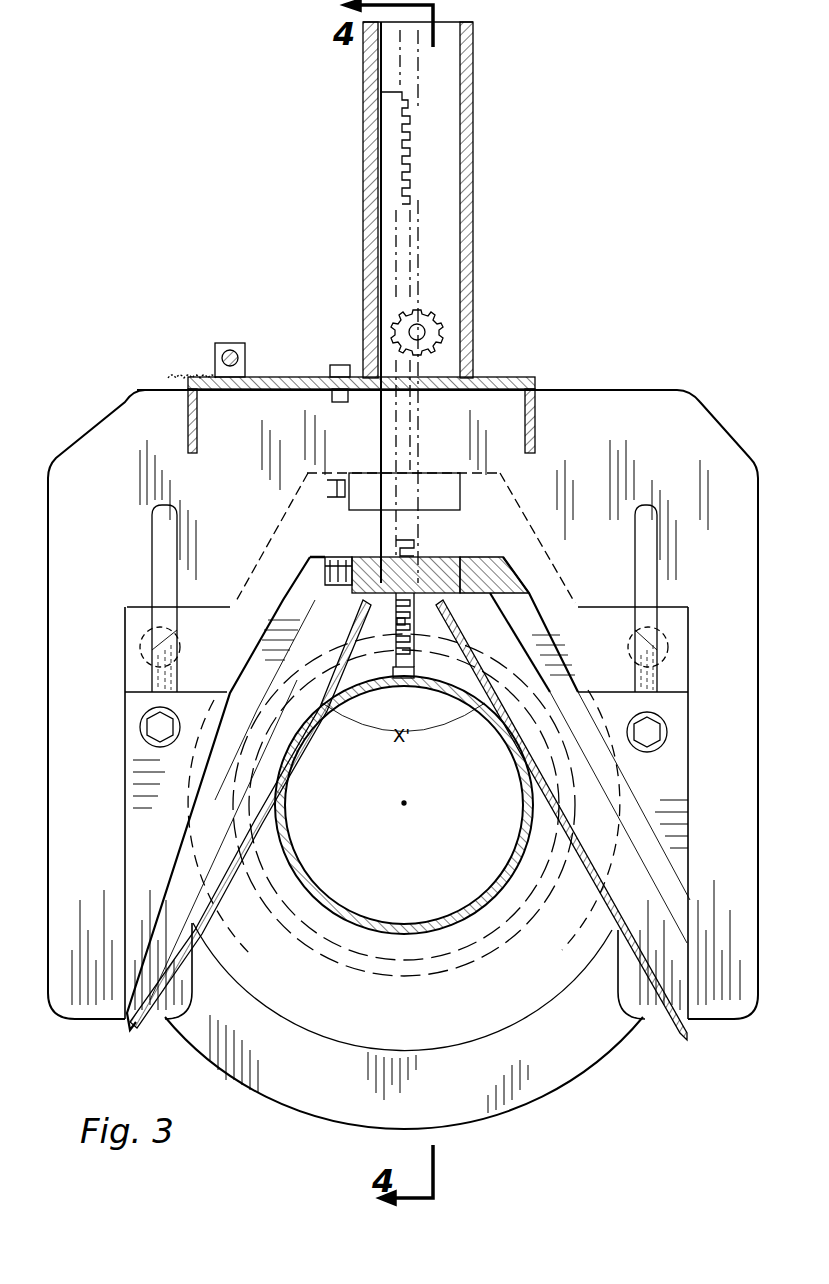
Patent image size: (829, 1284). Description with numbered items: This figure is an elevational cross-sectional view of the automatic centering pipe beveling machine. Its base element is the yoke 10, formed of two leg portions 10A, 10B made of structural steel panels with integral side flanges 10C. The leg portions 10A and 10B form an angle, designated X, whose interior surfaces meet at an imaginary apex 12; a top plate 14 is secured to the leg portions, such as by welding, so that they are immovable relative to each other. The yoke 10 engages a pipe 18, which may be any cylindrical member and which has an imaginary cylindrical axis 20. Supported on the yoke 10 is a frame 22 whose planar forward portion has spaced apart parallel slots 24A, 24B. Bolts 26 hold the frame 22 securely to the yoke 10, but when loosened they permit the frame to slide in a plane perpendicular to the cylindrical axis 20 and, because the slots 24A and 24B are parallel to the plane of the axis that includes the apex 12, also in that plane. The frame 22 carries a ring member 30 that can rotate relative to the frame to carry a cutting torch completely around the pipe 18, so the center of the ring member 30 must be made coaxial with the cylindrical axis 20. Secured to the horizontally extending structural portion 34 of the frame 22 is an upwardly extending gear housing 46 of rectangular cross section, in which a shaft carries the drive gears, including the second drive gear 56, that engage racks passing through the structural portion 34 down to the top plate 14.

The yoke 10 is at (533, 588).
The leg portion 10A is at (508, 760).
The leg portion 10B is at (290, 748).
The side flanges 10C is at (205, 790).
The apex 12 is at (420, 545).
The top plate 14 is at (443, 577).
The pipe 18 is at (362, 915).
The cylindrical axis 20 is at (402, 806).
The frame 22 is at (724, 402).
The slot 24A is at (651, 542).
The slot 24B is at (162, 542).
The bolts 26 is at (424, 333).
The ring member 30 is at (607, 1035).
The horizontally extending structural portion 34 is at (517, 383).
The gear housing 46 is at (463, 220).
The second drive gear 56 is at (432, 318).